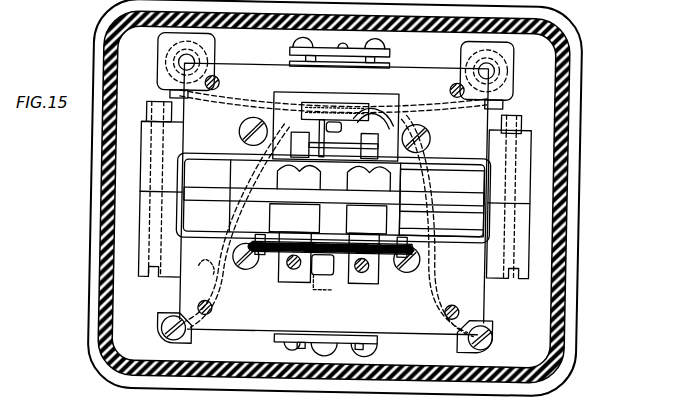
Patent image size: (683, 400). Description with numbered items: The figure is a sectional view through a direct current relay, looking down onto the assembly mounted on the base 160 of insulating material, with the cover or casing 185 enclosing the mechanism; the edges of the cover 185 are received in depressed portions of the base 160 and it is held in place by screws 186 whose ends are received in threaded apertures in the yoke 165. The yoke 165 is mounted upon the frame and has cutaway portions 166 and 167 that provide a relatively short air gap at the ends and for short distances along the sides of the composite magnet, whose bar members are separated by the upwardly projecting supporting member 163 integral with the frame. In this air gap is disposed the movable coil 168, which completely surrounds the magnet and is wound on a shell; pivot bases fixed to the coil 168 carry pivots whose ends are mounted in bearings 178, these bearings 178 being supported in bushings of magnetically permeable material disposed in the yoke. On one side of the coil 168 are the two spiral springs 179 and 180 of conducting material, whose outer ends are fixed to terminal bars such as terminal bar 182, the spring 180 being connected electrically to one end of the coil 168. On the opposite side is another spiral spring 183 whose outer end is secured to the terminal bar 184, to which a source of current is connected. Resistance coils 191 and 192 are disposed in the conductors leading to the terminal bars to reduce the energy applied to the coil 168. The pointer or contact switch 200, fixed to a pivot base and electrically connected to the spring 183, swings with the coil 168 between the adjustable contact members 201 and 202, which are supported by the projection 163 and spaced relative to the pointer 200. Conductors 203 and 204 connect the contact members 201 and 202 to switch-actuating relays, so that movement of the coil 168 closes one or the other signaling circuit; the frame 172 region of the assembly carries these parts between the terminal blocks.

The base 160 is at (569, 252).
The supporting member 163 is at (390, 190).
The yoke 165 is at (170, 286).
The cutaway portion 166 is at (176, 170).
The cutaway portion 167 is at (488, 177).
The movable coil 168 is at (494, 165).
The frame 172 is at (200, 172).
The bearings 178 is at (348, 38).
The spiral spring 179 is at (384, 124).
The spiral spring 180 is at (430, 139).
The terminal bar 182 is at (247, 123).
The spiral spring 183 is at (305, 300).
The terminal bar 184 is at (338, 218).
The cover 185 is at (566, 94).
The screws 186 is at (219, 85).
The resistance coil 191 is at (168, 57).
The resistance coil 192 is at (505, 50).
The pointer or contact switch 200 is at (213, 157).
The adjustable contact member 201 is at (272, 280).
The adjustable contact member 202 is at (382, 273).
The conductor 203 is at (221, 261).
The conductor 204 is at (448, 268).